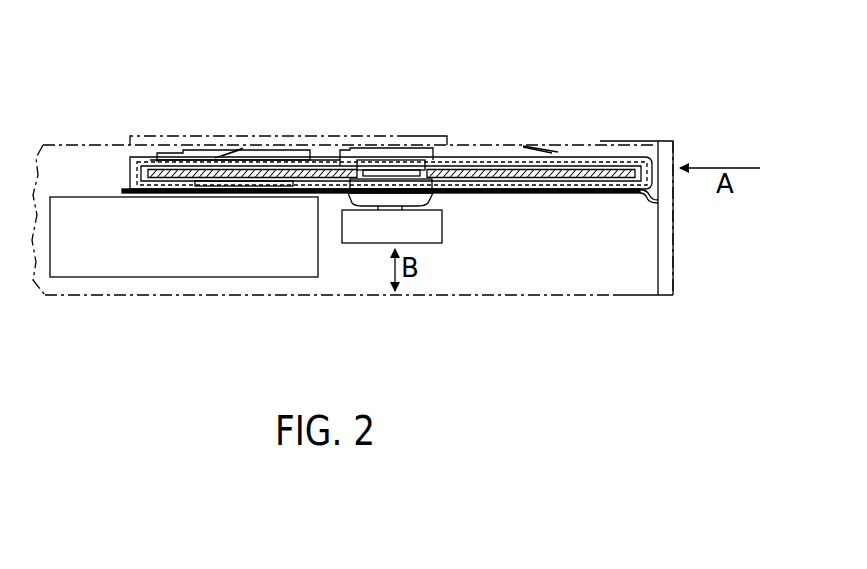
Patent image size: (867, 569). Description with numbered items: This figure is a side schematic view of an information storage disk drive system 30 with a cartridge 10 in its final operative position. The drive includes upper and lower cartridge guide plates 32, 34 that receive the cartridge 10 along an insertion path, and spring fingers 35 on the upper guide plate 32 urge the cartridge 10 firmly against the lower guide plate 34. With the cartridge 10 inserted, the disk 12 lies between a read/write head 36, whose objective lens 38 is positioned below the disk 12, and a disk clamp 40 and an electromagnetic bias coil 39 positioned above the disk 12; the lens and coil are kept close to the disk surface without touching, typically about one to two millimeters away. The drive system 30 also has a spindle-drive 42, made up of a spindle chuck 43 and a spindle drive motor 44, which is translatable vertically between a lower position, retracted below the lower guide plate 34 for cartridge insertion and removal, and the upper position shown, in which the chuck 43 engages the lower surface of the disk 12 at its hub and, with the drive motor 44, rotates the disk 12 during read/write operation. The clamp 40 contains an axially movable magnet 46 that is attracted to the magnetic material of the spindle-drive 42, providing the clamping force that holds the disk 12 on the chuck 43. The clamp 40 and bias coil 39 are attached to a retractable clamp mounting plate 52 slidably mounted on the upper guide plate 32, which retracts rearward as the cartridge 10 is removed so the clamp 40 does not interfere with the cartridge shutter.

The cartridge 10 is at (637, 141).
The disk 12 is at (163, 173).
The information storage disk drive system 30 is at (476, 114).
The upper cartridge guide plate 32 is at (607, 141).
The lower cartridge guide plate 34 is at (577, 192).
The spring fingers 35 is at (217, 147).
The read/write head 36 is at (168, 240).
The objective lens 38 is at (249, 186).
The electromagnetic bias coil 39 is at (296, 155).
The disk clamp 40 is at (403, 132).
The spindle-drive 42 is at (466, 224).
The spindle chuck 43 is at (428, 196).
The spindle drive motor 44 is at (442, 236).
The axially movable magnet 46 is at (369, 160).
The retractable clamp mounting plate 52 is at (253, 150).